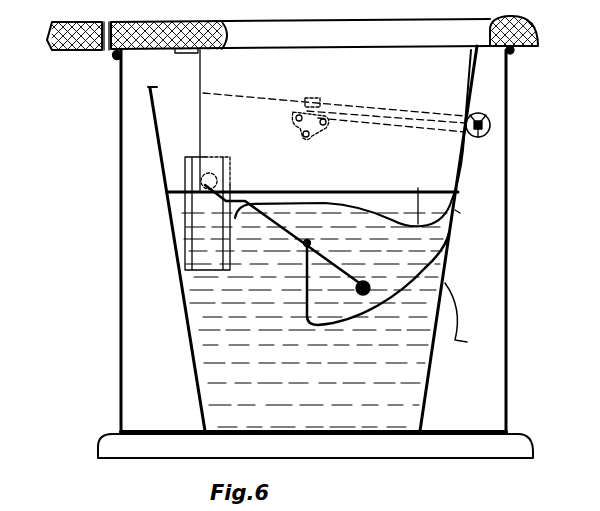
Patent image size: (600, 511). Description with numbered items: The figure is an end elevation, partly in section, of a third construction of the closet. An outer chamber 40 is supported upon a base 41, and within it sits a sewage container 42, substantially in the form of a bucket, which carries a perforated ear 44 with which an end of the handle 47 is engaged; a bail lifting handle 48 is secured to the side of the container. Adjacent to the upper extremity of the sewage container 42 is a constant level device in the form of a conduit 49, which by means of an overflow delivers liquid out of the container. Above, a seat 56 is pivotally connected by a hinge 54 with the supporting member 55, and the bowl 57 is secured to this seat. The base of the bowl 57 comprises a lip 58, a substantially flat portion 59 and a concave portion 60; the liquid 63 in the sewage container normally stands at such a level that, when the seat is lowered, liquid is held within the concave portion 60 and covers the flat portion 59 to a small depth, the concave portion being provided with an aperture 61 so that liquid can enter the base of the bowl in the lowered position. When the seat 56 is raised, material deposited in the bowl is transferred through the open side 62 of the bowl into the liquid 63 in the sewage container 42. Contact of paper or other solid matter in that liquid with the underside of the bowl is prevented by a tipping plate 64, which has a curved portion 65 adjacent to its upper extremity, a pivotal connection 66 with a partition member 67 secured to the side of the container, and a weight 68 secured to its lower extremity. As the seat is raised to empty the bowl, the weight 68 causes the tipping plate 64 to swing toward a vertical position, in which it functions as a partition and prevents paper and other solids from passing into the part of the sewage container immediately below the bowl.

The outer chamber 40 is at (508, 194).
The base 41 is at (519, 433).
The sewage container 42 is at (457, 212).
The perforated ear 44 is at (315, 100).
The handle 47 is at (490, 128).
The bail lifting handle 48 is at (469, 320).
The conduit 49 is at (184, 165).
The hinge 54 is at (106, 52).
The supporting member 55 is at (70, 51).
The seat 56 is at (151, 89).
The bowl 57 is at (470, 71).
The lip 58 is at (201, 183).
The flat portion 59 is at (311, 200).
The concave portion 60 is at (447, 232).
The aperture 61 is at (442, 213).
The open side 62 is at (204, 113).
The liquid 63 is at (218, 376).
The tipping plate 64 is at (268, 212).
The curved portion 65 is at (235, 218).
The pivotal connection 66 is at (305, 243).
The partition member 67 is at (307, 295).
The weight 68 is at (366, 282).